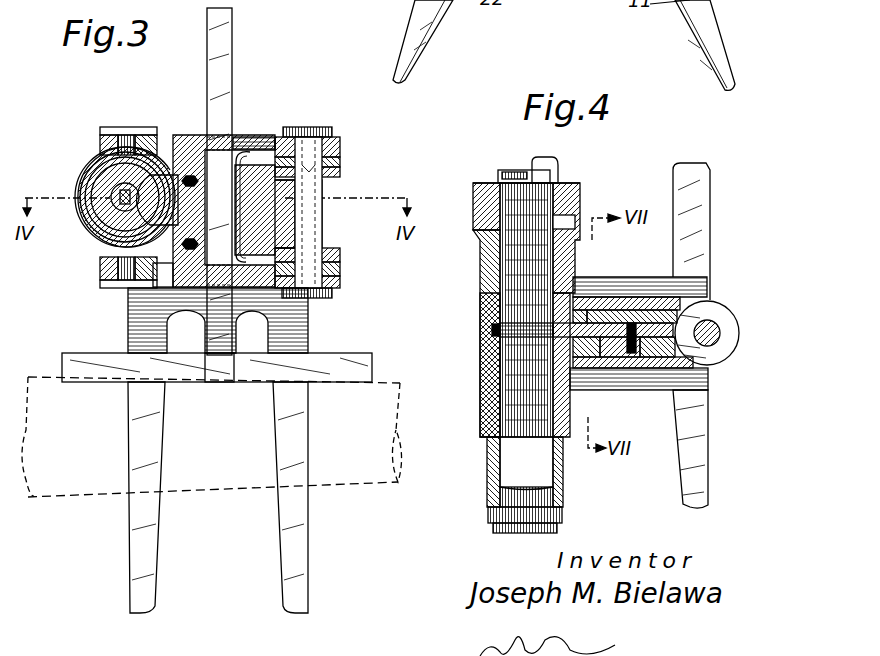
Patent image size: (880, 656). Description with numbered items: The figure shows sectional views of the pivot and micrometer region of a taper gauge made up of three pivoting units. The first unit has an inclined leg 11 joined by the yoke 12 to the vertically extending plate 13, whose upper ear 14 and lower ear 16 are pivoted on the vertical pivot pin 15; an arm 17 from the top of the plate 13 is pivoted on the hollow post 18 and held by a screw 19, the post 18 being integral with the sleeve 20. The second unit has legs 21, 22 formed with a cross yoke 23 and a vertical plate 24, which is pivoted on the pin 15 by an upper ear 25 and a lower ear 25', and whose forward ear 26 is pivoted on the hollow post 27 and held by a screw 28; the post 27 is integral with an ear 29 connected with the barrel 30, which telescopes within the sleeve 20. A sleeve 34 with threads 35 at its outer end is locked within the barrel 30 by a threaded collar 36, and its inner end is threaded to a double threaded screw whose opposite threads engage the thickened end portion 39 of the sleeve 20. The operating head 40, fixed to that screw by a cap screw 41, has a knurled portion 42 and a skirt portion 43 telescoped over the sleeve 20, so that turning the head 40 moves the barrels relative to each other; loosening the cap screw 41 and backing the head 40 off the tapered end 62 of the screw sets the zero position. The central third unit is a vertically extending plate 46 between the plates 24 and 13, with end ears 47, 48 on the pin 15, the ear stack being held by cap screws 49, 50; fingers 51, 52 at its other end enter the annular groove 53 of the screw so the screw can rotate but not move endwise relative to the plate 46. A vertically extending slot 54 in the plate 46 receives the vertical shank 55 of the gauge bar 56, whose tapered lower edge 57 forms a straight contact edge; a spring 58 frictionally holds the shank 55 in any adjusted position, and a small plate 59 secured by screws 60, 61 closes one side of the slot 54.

In FIG. 4, the inclined leg 11 is at (708, 474).
In FIG. 4, the yoke 12 is at (660, 395).
In FIG. 4, the vertically extending plate 13 is at (612, 372).
In FIG. 3, the upper ear 14 is at (340, 140).
In FIG. 3, the vertical pivot pin 15 is at (322, 190).
In FIG. 3, the lower ear 16 is at (340, 268).
In FIG. 3, the arm 17 is at (100, 136).
In FIG. 3, the hollow post 18 is at (123, 133).
In FIG. 3, the screw 19 is at (140, 127).
In FIG. 4, the sleeve 20 is at (500, 330).
In FIG. 3, the leg 21 is at (138, 527).
In FIG. 4, the leg 21 is at (549, 163).
In FIG. 3, the leg 22 is at (300, 541).
In FIG. 4, the leg 22 is at (712, 178).
In FIG. 3, the cross yoke 23 is at (258, 312).
In FIG. 4, the cross yoke 23 is at (650, 278).
In FIG. 3, the vertical plate 24 is at (262, 150).
In FIG. 4, the vertical plate 24 is at (598, 298).
In FIG. 3, the upper ear 25 is at (338, 149).
In FIG. 3, the lower ear 25' is at (335, 284).
In FIG. 3, the ear 26 is at (98, 276).
In FIG. 3, the hollow post 27 is at (118, 290).
In FIG. 3, the screw 28 is at (106, 289).
In FIG. 3, the ear 29 is at (100, 260).
In FIG. 4, the barrel 30 is at (484, 450).
In FIG. 4, the sleeve 34 is at (490, 470).
In FIG. 4, the threads 35 is at (496, 530).
In FIG. 4, the threaded collar 36 is at (492, 516).
In FIG. 4, the thickened end portion 39 is at (580, 222).
In FIG. 4, the operating head 40 is at (490, 176).
In FIG. 4, the cap screw 41 is at (513, 170).
In FIG. 4, the knurled portion 42 is at (583, 190).
In FIG. 4, the skirt portion 43 is at (480, 284).
In FIG. 3, the vertically extending plate 46 is at (191, 170).
In FIG. 4, the vertically extending plate 46 is at (580, 312).
In FIG. 3, the end ear 47 is at (342, 172).
In FIG. 3, the end ear 48 is at (340, 251).
In FIG. 3, the cap screw 49 is at (315, 128).
In FIG. 3, the cap screw 50 is at (325, 299).
In FIG. 3, the finger 51 is at (112, 178).
In FIG. 3, the finger 52 is at (102, 214).
In FIG. 4, the finger 52 is at (498, 338).
In FIG. 3, the annular groove 53 is at (115, 194).
In FIG. 4, the annular groove 53 is at (490, 322).
In FIG. 3, the vertically extending slot 54 is at (283, 204).
In FIG. 3, the vertical shank 55 is at (233, 50).
In FIG. 4, the vertical shank 55 is at (618, 325).
In FIG. 3, the gauge bar 56 is at (217, 364).
In FIG. 3, the lower edge 57 is at (95, 368).
In FIG. 3, the spring 58 is at (239, 150).
In FIG. 4, the spring 58 is at (631, 350).
In FIG. 4, the small plate 59 is at (598, 372).
In FIG. 3, the screw 60 is at (189, 176).
In FIG. 3, the screw 61 is at (186, 260).
In FIG. 4, the tapered end 62 is at (488, 188).